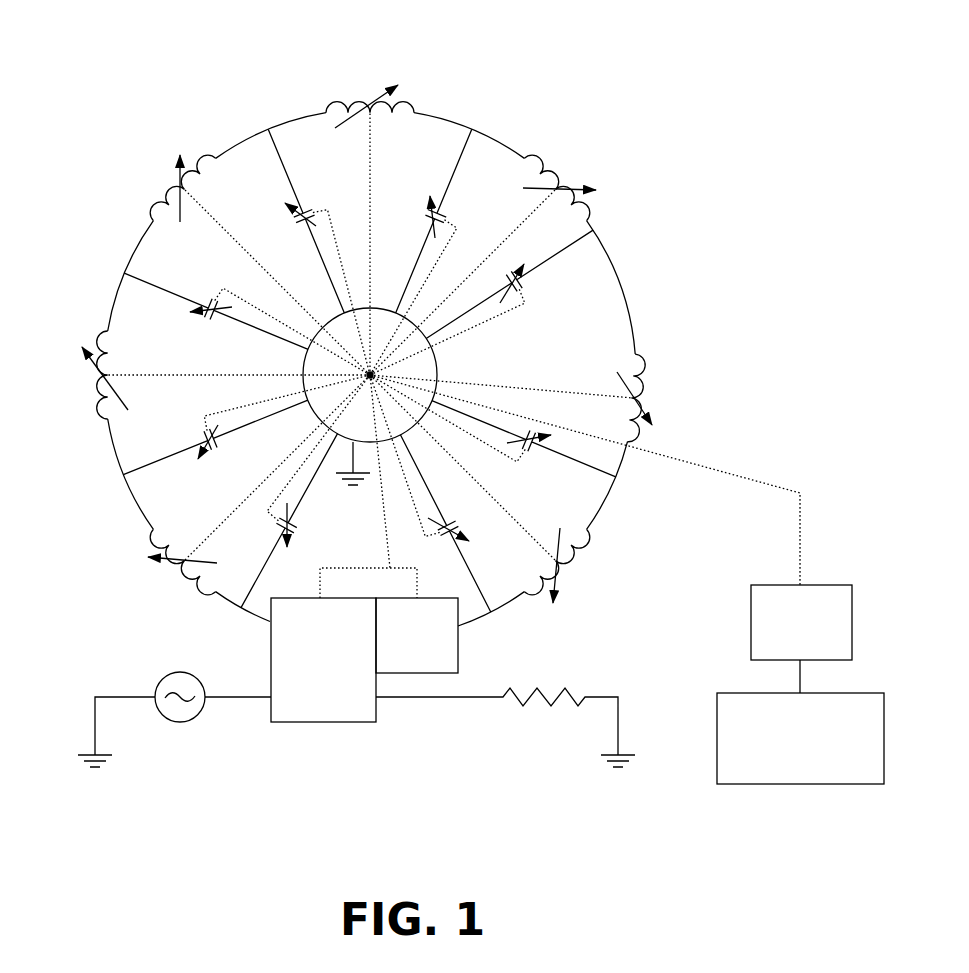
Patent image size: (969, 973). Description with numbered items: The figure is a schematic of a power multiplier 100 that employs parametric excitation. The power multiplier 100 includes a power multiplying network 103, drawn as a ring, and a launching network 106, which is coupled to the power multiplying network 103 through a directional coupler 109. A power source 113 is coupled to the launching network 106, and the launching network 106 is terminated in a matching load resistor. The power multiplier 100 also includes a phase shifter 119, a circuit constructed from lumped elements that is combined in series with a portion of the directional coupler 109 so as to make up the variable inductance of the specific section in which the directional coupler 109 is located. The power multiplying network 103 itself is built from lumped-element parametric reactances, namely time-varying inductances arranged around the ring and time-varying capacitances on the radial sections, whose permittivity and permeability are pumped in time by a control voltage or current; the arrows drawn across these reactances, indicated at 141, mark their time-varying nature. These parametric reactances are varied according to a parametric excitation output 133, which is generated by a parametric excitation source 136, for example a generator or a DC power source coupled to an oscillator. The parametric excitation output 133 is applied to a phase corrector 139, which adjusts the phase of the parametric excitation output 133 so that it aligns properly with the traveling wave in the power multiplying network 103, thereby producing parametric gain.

The power multiplier 100 is at (163, 60).
The power multiplying network 103 is at (260, 127).
The launching network 106 is at (238, 703).
The directional coupler 109 is at (323, 660).
The power source 113 is at (170, 670).
The phase shifter 119 is at (417, 635).
The parametric excitation output 133 is at (735, 477).
The parametric excitation source 136 is at (800, 722).
The phase corrector 139 is at (801, 622).
The time-varying modulation indicators 141 is at (333, 125).